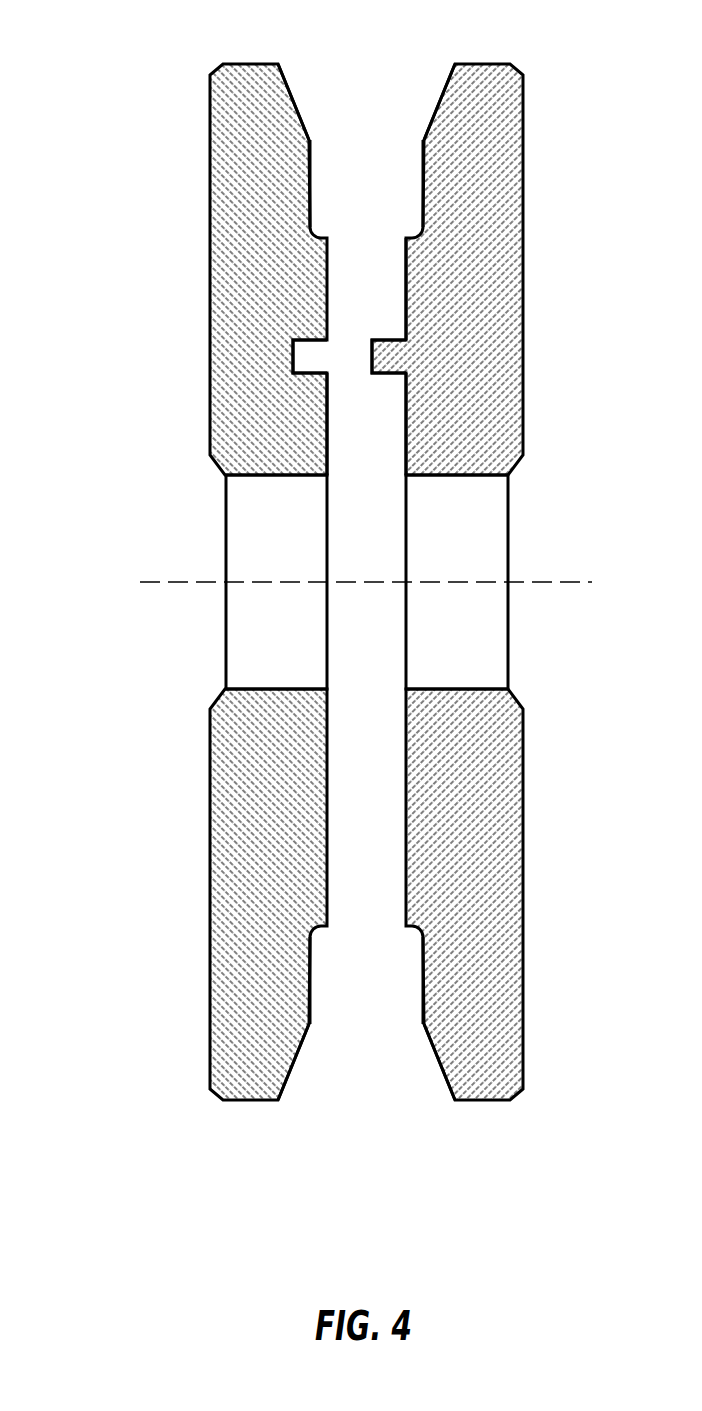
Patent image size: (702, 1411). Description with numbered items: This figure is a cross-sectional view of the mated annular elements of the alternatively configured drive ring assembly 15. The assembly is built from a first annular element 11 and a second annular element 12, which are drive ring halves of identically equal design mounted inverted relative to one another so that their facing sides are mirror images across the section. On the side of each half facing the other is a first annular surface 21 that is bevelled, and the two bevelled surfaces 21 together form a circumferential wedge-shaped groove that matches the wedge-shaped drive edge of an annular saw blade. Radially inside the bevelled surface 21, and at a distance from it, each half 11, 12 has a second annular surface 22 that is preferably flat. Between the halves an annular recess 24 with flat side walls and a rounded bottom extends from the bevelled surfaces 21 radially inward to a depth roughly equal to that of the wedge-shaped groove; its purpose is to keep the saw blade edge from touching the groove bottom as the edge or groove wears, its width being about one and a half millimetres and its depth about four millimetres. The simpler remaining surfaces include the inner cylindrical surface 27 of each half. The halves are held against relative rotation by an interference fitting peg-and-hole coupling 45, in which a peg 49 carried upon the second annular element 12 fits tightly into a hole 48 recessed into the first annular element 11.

The drive ring assembly 15 is at (108, 224).
The first annular element 11 is at (216, 268).
The second annular element 12 is at (517, 268).
The first annular surface 21 is at (299, 94).
The annular recess 24 is at (317, 193).
The second annular surface 22 is at (397, 298).
The peg 49 is at (366, 353).
The hole 48 is at (304, 354).
The peg-and-hole coupling 45 is at (327, 358).
The inner cylindrical surface 27 is at (275, 478).